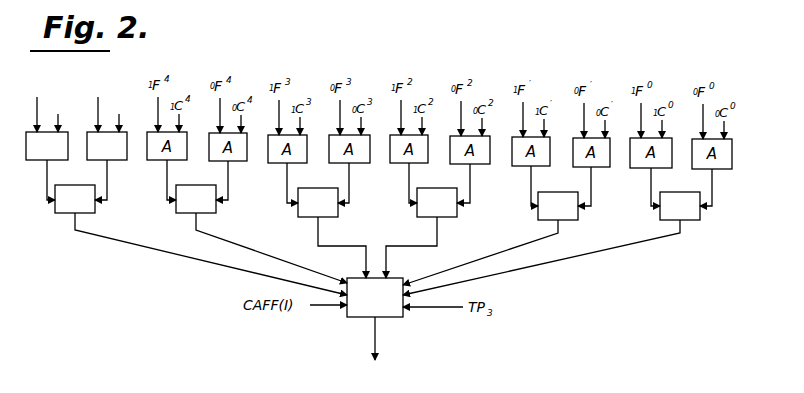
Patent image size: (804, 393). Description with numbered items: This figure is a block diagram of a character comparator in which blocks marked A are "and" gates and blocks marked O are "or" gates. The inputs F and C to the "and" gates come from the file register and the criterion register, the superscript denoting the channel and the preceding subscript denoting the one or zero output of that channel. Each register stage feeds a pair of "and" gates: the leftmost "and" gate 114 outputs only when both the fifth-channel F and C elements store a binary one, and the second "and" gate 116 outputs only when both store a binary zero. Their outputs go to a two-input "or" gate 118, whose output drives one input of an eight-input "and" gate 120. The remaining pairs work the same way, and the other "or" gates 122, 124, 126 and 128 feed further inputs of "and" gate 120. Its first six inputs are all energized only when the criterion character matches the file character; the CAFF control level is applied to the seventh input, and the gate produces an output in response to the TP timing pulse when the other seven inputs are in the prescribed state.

The "and" gate 114 is at (40, 161).
The second "and" gate 116 is at (104, 161).
The two-input "or" gate 118 is at (63, 213).
The eight-input "and" gate 120 is at (184, 213).
The "or" gate 122 is at (309, 217).
The "or" gate 124 is at (447, 217).
The "or" gate 126 is at (568, 220).
The "or" gate 128 is at (688, 220).